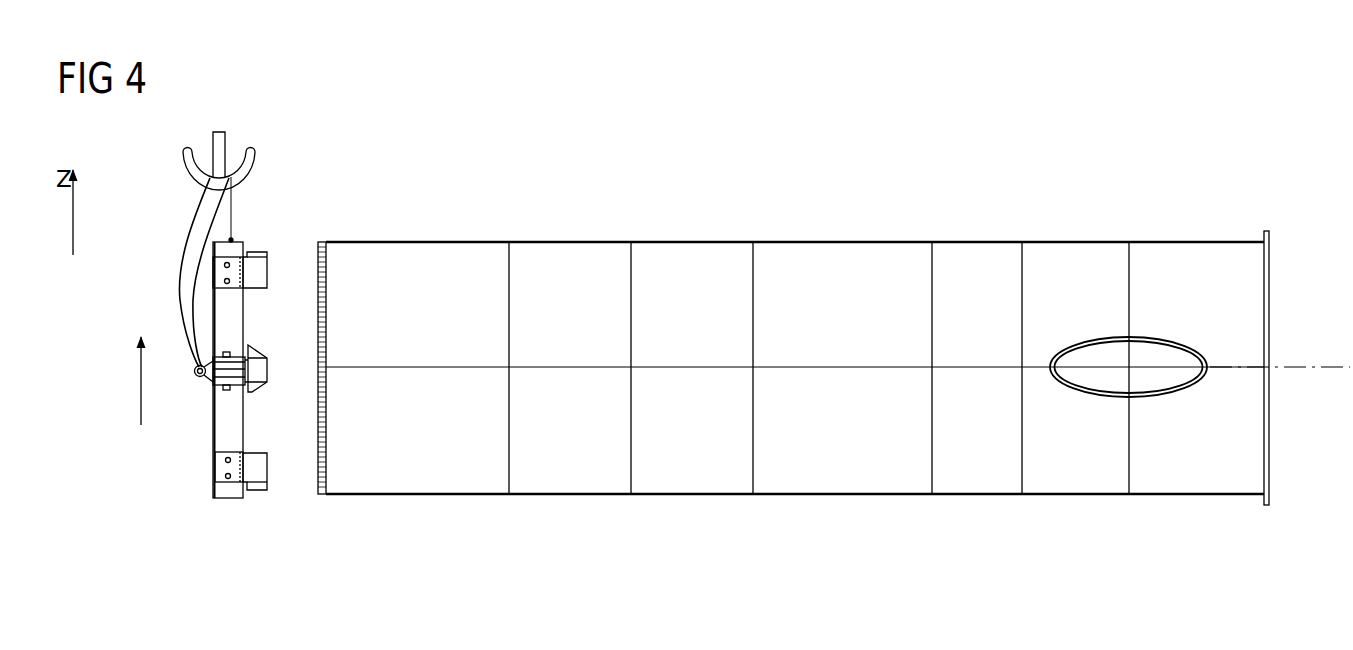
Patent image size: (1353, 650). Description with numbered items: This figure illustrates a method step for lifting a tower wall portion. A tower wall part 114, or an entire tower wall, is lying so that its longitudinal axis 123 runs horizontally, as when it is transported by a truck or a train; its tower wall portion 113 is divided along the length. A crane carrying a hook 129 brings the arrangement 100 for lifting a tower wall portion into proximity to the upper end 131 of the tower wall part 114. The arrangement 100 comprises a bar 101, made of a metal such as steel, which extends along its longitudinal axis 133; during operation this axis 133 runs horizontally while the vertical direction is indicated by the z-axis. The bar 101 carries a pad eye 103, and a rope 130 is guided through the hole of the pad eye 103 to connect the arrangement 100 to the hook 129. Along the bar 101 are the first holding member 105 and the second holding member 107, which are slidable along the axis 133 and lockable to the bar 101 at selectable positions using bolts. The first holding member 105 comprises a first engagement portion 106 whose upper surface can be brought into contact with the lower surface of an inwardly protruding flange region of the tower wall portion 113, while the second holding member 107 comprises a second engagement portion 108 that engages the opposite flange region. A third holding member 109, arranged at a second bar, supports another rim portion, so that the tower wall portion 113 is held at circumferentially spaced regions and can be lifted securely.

The arrangement for lifting a tower wall portion 100 is at (162, 520).
The bar 101 is at (230, 323).
The pad eye 103 is at (194, 379).
The first holding member 105 is at (223, 468).
The first engagement portion 106 is at (257, 492).
The second holding member 107 is at (222, 276).
The second engagement portion 108 is at (259, 250).
The third holding member 109 is at (257, 391).
The tower wall portion 113 is at (537, 252).
The tower wall part 114 is at (1024, 132).
The longitudinal axis of the tower wall 123 is at (1304, 366).
The hook 129 is at (220, 145).
The rope 130 is at (187, 224).
The upper end of the tower wall part 131 is at (318, 478).
The longitudinal axis of the bar 133 is at (139, 393).